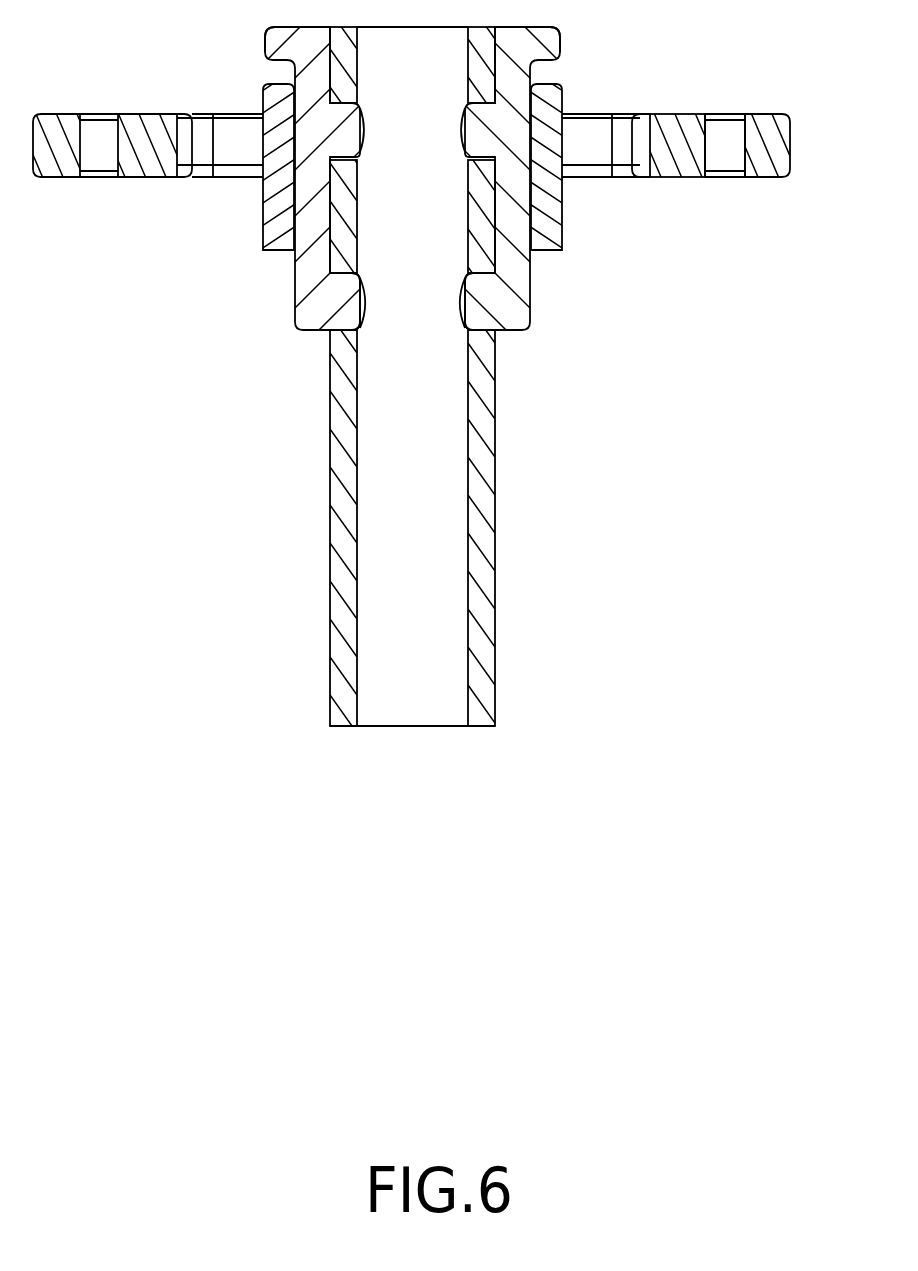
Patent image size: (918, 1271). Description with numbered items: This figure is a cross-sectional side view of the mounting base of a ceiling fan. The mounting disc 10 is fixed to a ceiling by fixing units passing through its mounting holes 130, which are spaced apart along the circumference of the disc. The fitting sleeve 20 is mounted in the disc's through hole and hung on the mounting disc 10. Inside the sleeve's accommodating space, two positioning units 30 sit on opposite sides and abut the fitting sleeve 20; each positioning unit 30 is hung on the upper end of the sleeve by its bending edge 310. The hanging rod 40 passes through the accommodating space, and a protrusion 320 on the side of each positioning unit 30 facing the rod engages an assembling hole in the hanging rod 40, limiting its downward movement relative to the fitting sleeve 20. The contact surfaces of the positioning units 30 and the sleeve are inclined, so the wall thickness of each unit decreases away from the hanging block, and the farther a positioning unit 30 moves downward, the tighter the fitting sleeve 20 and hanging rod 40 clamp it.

The mounting disc 10 is at (678, 115).
The mounting holes 130 is at (737, 117).
The fitting sleeve 20 is at (562, 210).
The positioning unit 30 is at (295, 265).
The bending edge 310 is at (267, 45).
The protrusion 320 is at (317, 332).
The hanging rod 40 is at (496, 433).